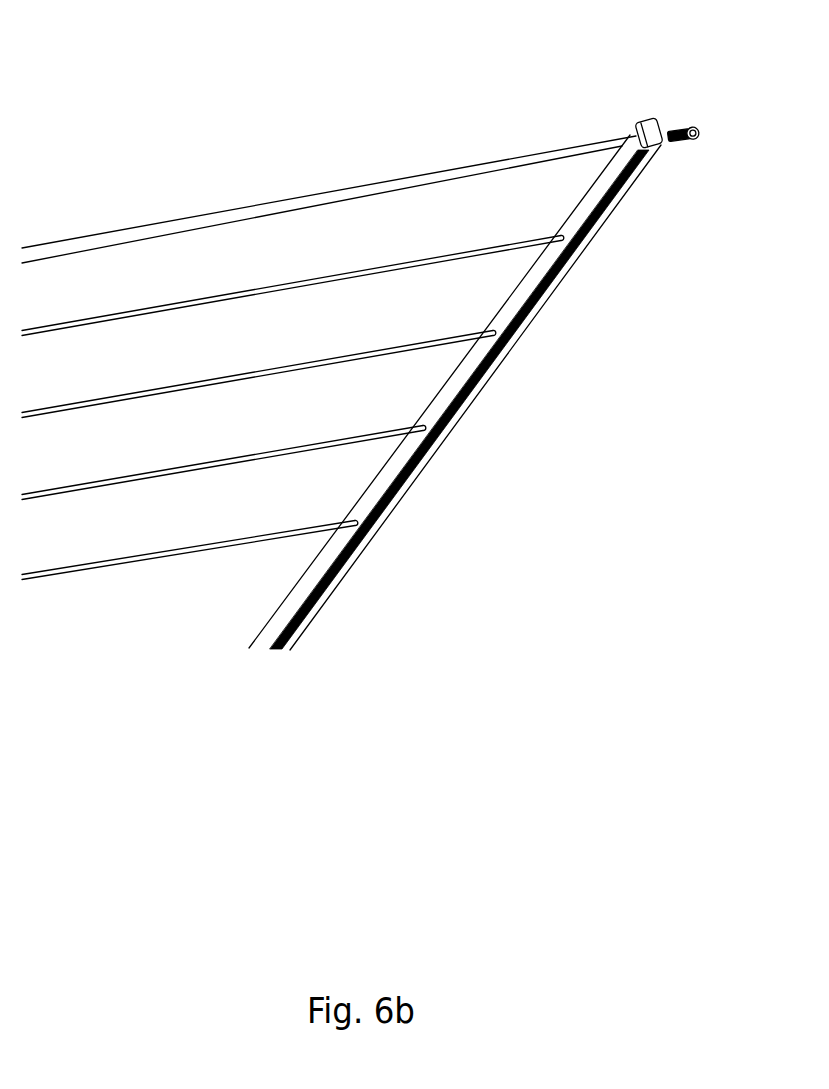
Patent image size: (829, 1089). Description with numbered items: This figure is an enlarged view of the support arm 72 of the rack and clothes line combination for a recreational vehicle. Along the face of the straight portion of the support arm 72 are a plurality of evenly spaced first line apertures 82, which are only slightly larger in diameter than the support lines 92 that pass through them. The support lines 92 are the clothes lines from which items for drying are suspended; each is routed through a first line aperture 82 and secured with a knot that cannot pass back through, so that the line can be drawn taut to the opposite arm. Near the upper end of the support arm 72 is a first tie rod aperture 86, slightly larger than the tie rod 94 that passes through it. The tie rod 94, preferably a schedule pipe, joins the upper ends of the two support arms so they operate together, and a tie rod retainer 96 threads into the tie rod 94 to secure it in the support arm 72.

The support arm 72 is at (402, 490).
The first line apertures 82 is at (580, 255).
The first tie rod aperture 86 is at (634, 121).
The support lines 92 is at (402, 355).
The tie rod 94 is at (338, 189).
The tie rod retainer 96 is at (700, 126).